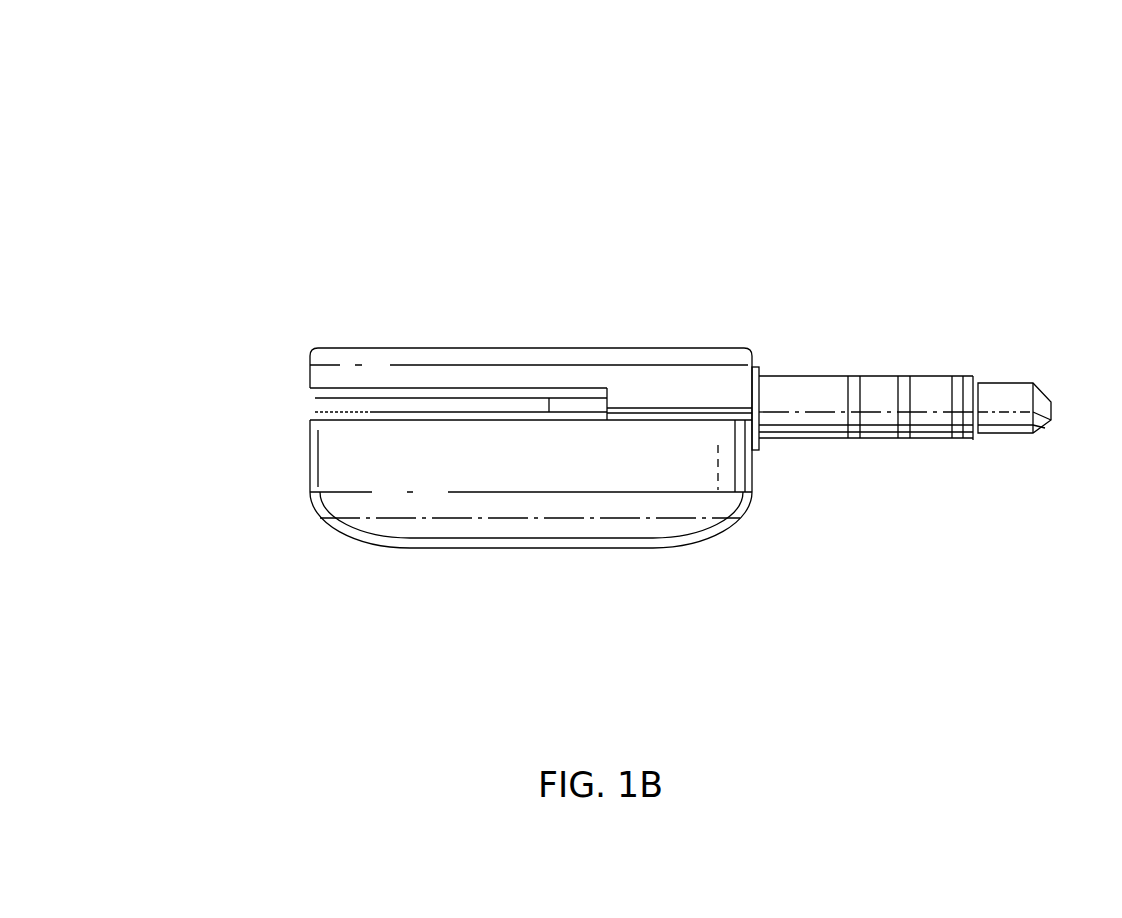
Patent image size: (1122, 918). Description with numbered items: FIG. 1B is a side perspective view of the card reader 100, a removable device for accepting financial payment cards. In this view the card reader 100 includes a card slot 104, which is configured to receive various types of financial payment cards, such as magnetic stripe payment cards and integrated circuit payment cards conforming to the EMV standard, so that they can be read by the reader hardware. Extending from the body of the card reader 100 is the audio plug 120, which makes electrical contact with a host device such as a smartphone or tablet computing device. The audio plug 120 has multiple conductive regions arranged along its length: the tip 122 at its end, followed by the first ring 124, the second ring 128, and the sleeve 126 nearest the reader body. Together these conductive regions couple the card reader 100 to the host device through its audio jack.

The card reader 100 is at (997, 214).
The card slot 104 is at (317, 405).
The audio plug 120 is at (1052, 300).
The tip 122 is at (1008, 434).
The first ring 124 is at (930, 384).
The sleeve 126 is at (786, 440).
The second ring 128 is at (878, 440).